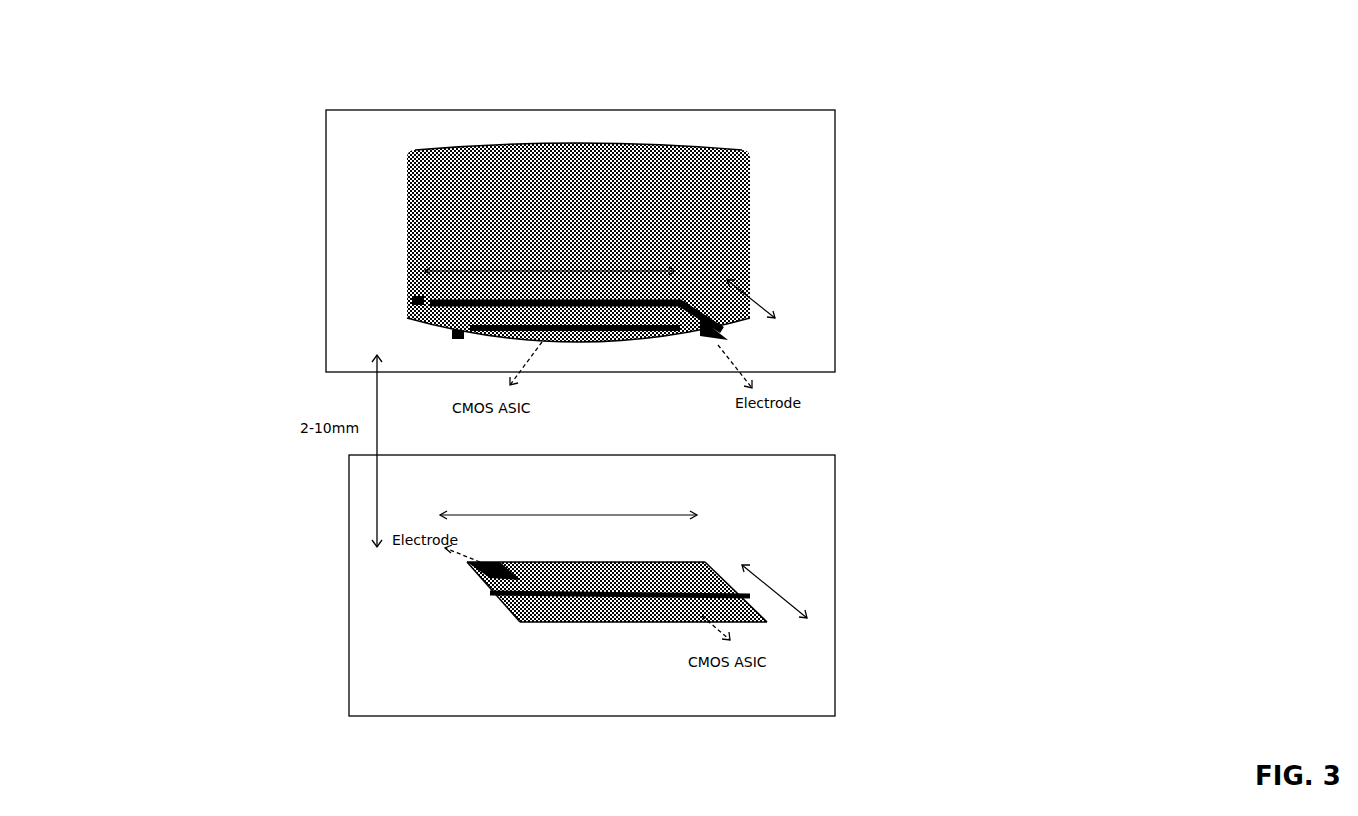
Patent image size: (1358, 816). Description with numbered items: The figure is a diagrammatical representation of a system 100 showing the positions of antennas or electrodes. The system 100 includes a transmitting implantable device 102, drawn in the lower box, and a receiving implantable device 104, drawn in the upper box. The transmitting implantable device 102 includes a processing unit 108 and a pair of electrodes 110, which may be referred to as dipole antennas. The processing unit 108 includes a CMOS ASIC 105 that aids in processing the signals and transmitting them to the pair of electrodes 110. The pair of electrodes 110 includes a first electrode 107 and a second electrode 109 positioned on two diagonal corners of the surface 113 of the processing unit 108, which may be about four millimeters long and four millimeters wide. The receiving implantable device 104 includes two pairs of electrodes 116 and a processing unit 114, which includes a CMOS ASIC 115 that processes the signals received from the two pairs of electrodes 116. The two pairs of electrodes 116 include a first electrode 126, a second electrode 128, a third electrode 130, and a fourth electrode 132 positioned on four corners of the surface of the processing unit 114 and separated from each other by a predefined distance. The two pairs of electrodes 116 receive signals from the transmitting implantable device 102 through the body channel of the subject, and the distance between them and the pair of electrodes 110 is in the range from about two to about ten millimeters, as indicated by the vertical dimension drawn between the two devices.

The system 100 is at (65, 110).
The transmitting implantable device 102 is at (347, 540).
The receiving implantable device 104 is at (326, 190).
The CMOS ASIC 105 is at (575, 622).
The first electrode 107 is at (465, 562).
The processing unit 108 is at (622, 622).
The second electrode 109 is at (768, 622).
The pair of electrodes 110 is at (707, 622).
The surface 113 is at (705, 562).
The processing unit 114 is at (578, 242).
The CMOS ASIC 115 is at (615, 345).
The two pairs of electrodes 116 is at (665, 145).
The first electrode 126 is at (410, 296).
The second electrode 128 is at (724, 340).
The third electrode 130 is at (757, 282).
The fourth electrode 132 is at (407, 318).